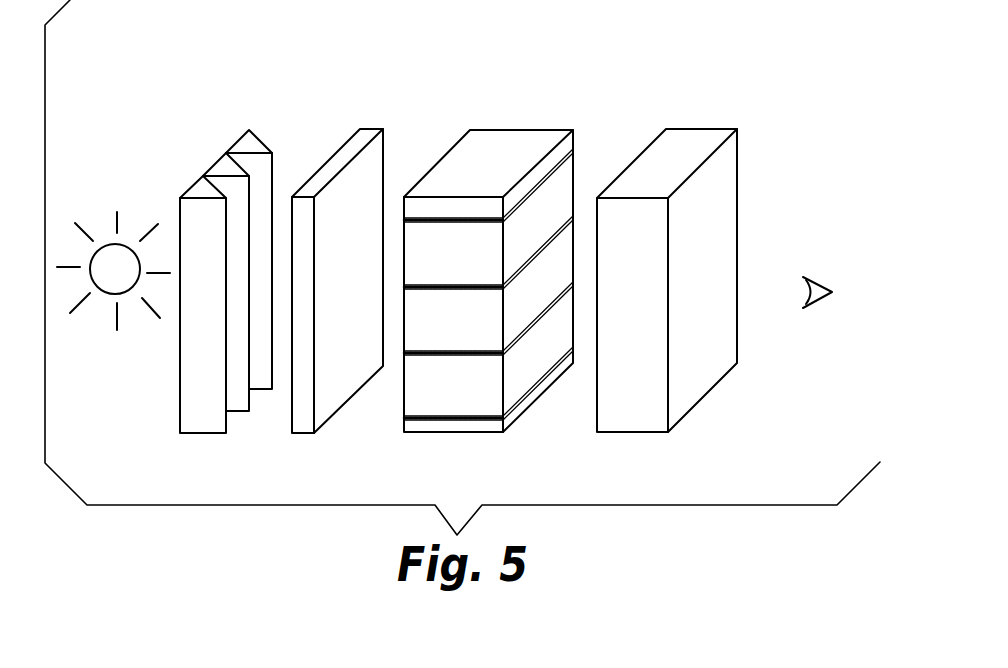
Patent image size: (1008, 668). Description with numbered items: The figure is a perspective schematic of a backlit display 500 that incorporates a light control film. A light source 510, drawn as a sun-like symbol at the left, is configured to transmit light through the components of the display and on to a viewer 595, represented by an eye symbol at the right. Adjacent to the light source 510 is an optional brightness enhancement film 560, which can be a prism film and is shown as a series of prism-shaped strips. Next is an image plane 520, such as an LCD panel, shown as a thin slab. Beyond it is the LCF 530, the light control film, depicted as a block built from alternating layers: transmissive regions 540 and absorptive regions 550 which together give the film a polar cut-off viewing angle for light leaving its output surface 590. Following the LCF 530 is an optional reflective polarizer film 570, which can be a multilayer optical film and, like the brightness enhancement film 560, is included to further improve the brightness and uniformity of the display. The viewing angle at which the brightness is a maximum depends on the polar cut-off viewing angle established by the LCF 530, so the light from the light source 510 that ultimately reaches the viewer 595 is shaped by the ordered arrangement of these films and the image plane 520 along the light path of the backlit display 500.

The backlit display 500 is at (260, 58).
The light source 510 is at (110, 257).
The image plane 520 is at (352, 148).
The light control film 530 is at (473, 150).
The transmissive regions 540 is at (468, 398).
The absorptive regions 550 is at (430, 355).
The brightness enhancement film 560 is at (245, 145).
The reflective polarizer film 570 is at (697, 138).
The output surface 590 is at (563, 191).
The viewer 595 is at (817, 288).